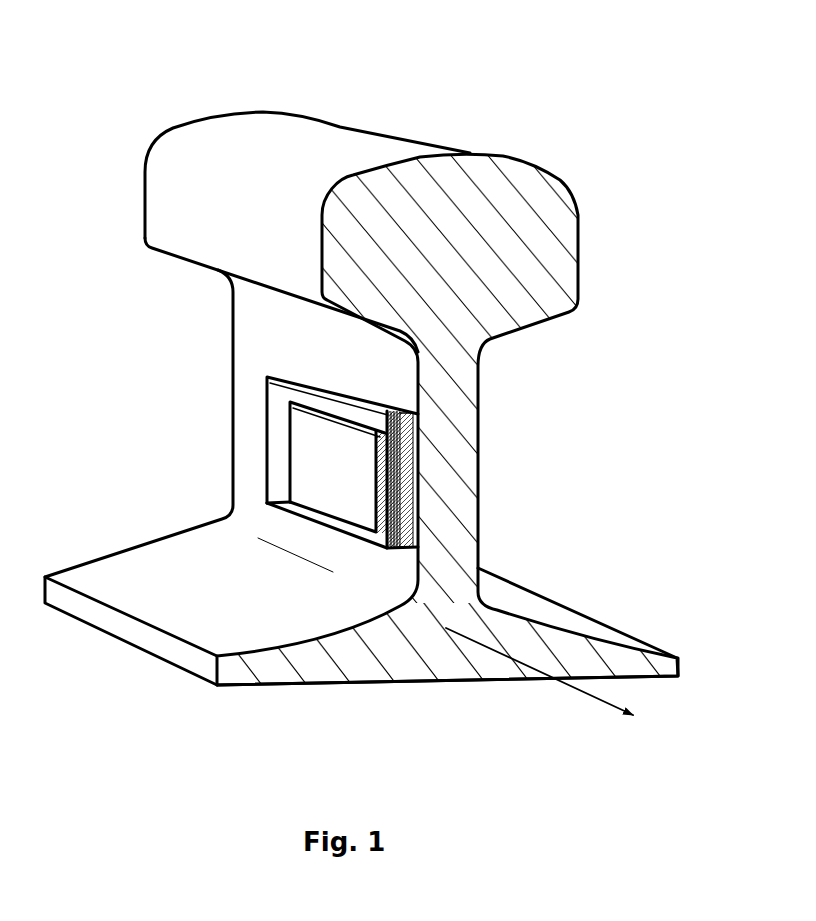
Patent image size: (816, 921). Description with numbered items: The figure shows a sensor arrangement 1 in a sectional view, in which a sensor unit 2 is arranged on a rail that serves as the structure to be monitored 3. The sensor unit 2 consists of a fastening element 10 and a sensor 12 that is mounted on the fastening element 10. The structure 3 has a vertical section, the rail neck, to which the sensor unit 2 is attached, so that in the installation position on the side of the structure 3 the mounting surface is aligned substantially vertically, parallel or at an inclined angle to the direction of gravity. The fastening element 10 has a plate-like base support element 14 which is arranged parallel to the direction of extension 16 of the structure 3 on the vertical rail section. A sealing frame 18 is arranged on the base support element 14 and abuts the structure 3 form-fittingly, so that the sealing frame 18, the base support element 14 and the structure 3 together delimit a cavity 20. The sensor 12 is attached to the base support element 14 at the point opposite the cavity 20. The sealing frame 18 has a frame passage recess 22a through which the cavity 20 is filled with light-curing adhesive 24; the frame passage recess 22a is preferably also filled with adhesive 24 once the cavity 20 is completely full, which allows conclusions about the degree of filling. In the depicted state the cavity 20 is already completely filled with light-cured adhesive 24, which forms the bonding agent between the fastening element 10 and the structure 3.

The sensor arrangement 1 is at (165, 98).
The sensor unit 2 is at (250, 375).
The structure to be monitored 3 is at (488, 223).
The fastening element 10 is at (262, 417).
The sensor 12 is at (303, 473).
The base support element 14 is at (298, 512).
The direction of extension 16 is at (538, 657).
The sealing frame 18 is at (370, 396).
The cavity 20 is at (410, 438).
The frame passage recess 22a is at (403, 404).
The adhesive 24 is at (410, 497).